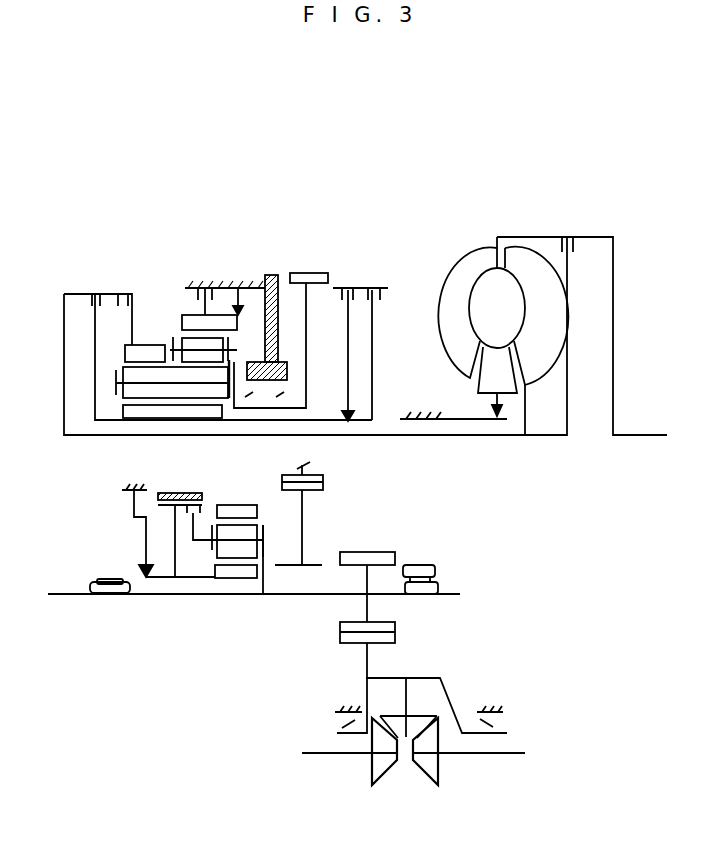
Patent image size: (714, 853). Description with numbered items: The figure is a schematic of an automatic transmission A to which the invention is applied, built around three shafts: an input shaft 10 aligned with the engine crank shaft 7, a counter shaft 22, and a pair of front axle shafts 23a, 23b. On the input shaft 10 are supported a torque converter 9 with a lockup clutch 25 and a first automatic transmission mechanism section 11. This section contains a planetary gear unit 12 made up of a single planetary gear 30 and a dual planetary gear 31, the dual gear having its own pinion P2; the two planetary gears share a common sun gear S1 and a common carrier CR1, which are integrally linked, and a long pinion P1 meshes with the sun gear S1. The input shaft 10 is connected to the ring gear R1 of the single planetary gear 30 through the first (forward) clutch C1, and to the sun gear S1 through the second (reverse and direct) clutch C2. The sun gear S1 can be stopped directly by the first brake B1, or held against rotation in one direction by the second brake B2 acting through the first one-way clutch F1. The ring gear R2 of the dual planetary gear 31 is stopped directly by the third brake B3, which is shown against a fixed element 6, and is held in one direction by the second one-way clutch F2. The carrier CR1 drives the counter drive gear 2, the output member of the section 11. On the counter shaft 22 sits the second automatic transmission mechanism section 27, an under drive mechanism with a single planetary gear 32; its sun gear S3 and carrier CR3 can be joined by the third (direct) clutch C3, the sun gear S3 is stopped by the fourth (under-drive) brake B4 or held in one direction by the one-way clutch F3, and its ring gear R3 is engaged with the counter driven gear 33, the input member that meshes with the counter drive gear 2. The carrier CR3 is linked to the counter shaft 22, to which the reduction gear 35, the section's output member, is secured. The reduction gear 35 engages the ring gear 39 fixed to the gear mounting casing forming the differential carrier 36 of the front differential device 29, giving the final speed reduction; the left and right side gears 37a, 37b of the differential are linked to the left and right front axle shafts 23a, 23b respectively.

The input shaft 10 is at (102, 437).
The first automatic transmission mechanism section 11 is at (73, 278).
The second clutch C2 is at (101, 288).
The first clutch C1 is at (132, 288).
The automatic transmission A is at (124, 230).
The planetary gear unit 12 is at (148, 237).
The single planetary gear 30 is at (141, 336).
The dual planetary gear 31 is at (185, 304).
The brake support 6 is at (228, 288).
The third brake B3 is at (225, 288).
The second one-way clutch F2 is at (257, 320).
The counter drive gear 2 is at (312, 272).
The second brake B2 is at (360, 341).
The first brake B1 is at (382, 342).
The ring gear R1 is at (123, 358).
The long pinion P1 is at (132, 392).
The sun gear S1 is at (171, 418).
The carrier CR1 is at (226, 398).
The ring gear R2 is at (205, 323).
The second pinion P2 is at (213, 357).
The first one-way clutch F1 is at (285, 345).
The torque converter 9 is at (482, 240).
The lockup clutch 25 is at (578, 243).
The engine crank shaft 7 is at (640, 436).
The counter shaft 22 is at (155, 597).
The one-way clutch F3 is at (163, 531).
The second automatic transmission mechanism section 27 is at (130, 528).
The fourth brake B4 is at (185, 504).
The third clutch C3 is at (185, 518).
The single planetary gear 32 is at (240, 497).
The ring gear R3 is at (257, 512).
The sun gear S3 is at (230, 579).
The carrier CR3 is at (265, 552).
The counter driven gear 33 is at (323, 485).
The reduction gear 35 is at (376, 552).
The ring gear 39 is at (345, 640).
The differential carrier 36 is at (425, 677).
The front differential device 29 is at (411, 781).
The left side gear 37a is at (380, 786).
The right side gear 37b is at (430, 786).
The left front axle shaft 23a is at (338, 755).
The right front axle shaft 23b is at (508, 755).